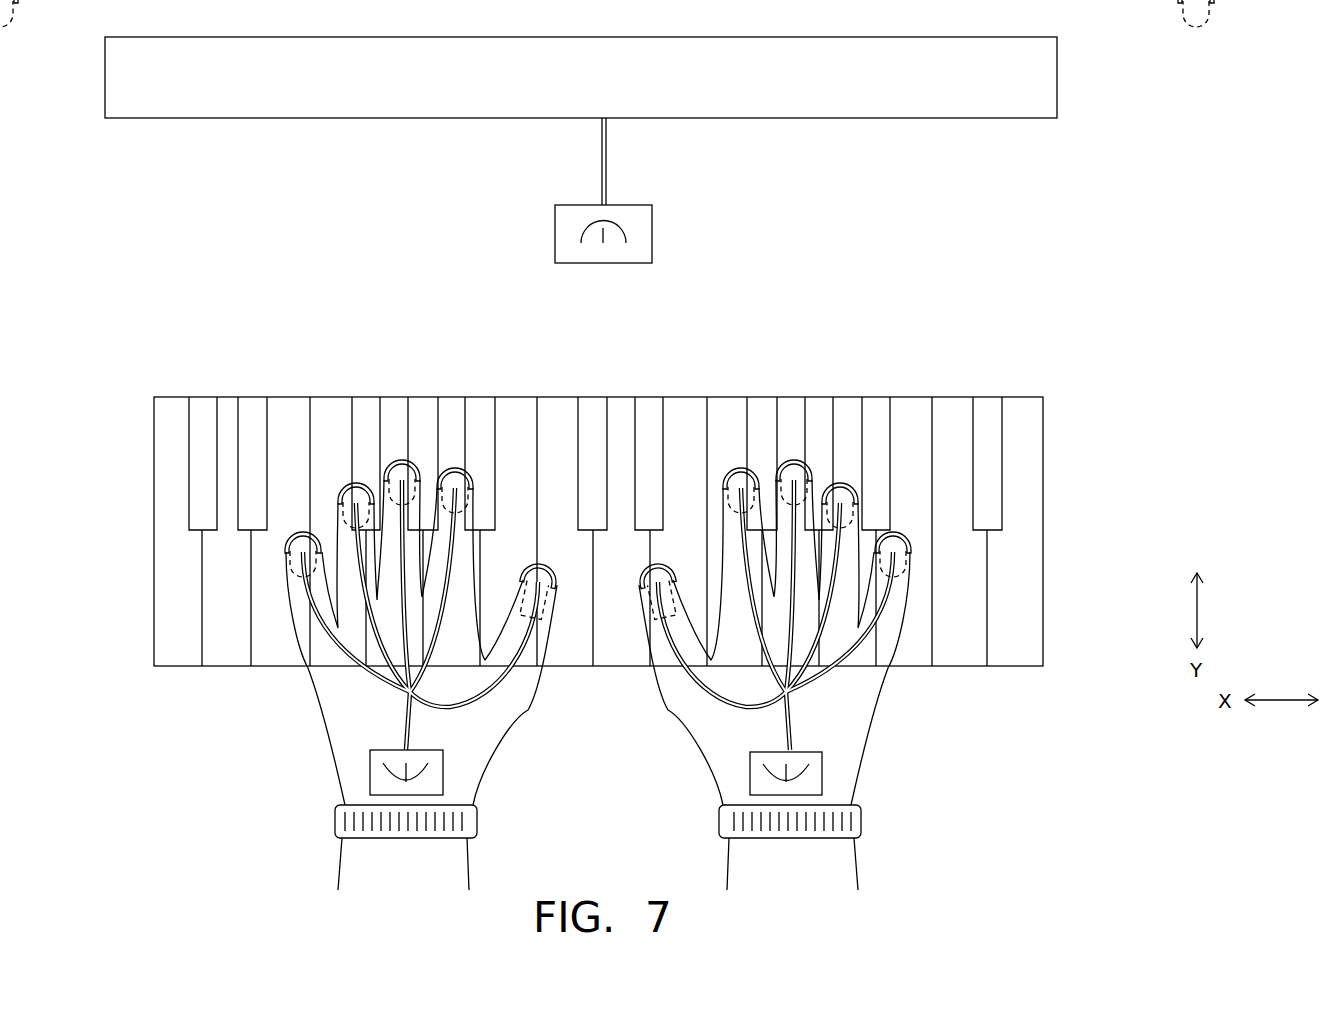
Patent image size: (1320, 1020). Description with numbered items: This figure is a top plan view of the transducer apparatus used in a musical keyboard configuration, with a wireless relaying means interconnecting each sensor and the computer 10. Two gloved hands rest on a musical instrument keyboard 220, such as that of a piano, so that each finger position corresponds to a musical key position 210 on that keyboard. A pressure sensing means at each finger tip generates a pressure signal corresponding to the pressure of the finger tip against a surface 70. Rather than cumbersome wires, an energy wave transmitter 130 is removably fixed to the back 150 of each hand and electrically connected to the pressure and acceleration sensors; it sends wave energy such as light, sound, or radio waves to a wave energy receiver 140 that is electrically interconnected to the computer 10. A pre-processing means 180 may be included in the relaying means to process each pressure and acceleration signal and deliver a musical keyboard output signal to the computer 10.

The computer 10 is at (1057, 84).
The wave energy receiver 140 is at (652, 243).
The musical instrument keyboard 220 is at (616, 516).
The musical key position 210 is at (215, 608).
The surface 70 is at (633, 566).
The back of hand 150 is at (607, 445).
The energy wave transmitter 130 is at (596, 791).
The pre-processing means 180 is at (443, 777).